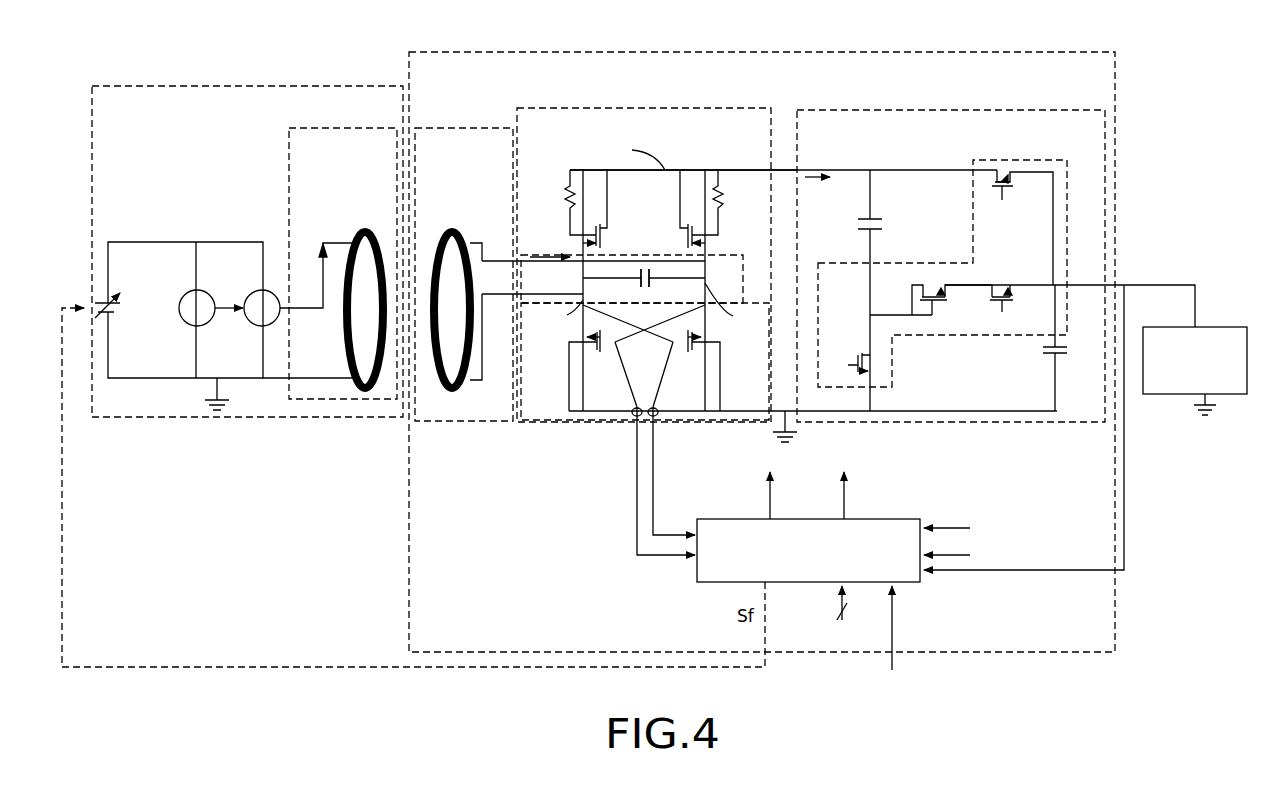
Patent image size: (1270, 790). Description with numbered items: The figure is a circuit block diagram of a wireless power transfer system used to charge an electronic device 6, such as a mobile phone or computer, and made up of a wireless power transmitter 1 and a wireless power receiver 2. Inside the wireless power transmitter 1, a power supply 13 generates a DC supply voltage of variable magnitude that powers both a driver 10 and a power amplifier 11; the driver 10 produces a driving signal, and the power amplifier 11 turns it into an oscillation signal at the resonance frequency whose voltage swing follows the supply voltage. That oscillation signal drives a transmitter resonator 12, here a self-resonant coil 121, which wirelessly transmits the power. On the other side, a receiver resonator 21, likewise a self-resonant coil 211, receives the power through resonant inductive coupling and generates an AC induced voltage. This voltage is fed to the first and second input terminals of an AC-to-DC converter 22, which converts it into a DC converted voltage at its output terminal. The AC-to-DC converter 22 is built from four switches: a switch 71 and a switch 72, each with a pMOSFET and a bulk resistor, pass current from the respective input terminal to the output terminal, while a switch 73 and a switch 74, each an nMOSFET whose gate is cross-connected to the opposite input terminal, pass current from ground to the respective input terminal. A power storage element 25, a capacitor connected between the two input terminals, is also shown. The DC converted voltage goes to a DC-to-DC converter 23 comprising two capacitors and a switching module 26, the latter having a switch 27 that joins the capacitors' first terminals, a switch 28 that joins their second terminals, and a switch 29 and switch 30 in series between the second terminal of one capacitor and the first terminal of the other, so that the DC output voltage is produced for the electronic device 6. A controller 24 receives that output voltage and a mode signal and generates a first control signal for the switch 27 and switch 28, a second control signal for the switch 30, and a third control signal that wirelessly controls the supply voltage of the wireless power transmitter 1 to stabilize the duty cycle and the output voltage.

The wireless power transmitter 1 is at (210, 86).
The driver 10 is at (197, 327).
The power amplifier 11 is at (258, 328).
The transmitter resonator 12 is at (367, 128).
The self-resonant coil 121 is at (363, 228).
The power supply 13 is at (97, 303).
The wireless power receiver 2 is at (713, 52).
The receiver resonator 21 is at (453, 421).
The self-resonant coil 211 is at (453, 230).
The AC-to-DC converter 22 is at (665, 108).
The DC-to-DC converter 23 is at (856, 108).
The controller 24 is at (885, 518).
The power storage element 25 is at (652, 268).
The switching module 26 is at (1008, 108).
The switch 27 is at (1012, 176).
The switch 28 is at (864, 357).
The switch 29 is at (943, 303).
The switch 30 is at (995, 310).
The electronic device 6 is at (1233, 333).
The switch 71 is at (552, 166).
The switch 72 is at (752, 152).
The switch 73 is at (603, 392).
The switch 74 is at (683, 392).